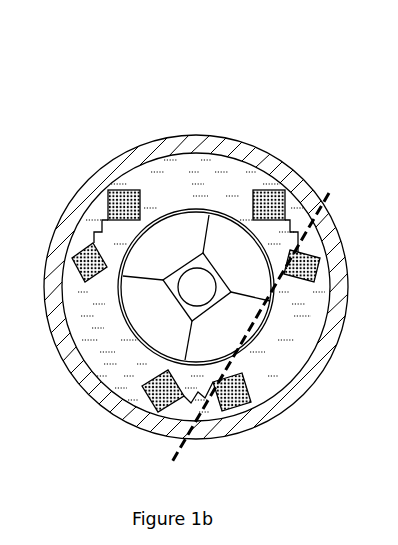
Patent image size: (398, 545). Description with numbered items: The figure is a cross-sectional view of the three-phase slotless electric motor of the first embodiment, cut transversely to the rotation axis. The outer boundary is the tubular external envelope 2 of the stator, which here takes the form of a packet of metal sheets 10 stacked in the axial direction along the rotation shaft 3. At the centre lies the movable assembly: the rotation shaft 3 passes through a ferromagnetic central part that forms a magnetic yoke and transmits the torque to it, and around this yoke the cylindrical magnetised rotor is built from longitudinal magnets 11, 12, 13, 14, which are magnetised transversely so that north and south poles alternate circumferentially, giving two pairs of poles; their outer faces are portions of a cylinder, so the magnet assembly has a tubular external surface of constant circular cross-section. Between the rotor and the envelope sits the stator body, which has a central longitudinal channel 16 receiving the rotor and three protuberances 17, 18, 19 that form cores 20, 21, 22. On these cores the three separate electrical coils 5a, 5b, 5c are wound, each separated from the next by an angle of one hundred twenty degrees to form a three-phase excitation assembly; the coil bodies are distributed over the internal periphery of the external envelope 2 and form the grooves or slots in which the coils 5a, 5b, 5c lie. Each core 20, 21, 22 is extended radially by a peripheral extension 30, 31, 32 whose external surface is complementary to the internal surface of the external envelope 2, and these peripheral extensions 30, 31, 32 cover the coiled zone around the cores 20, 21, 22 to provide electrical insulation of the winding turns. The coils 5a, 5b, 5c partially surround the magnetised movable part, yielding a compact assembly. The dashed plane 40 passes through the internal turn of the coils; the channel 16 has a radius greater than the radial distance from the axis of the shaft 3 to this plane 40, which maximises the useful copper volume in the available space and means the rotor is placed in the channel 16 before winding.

The external envelope 2 is at (56, 212).
The rotation shaft 3 is at (202, 283).
The electrical coil 5a is at (78, 270).
The electrical coil 5b is at (310, 258).
The electrical coil 5c is at (113, 192).
The metal sheets 10 is at (0, 177).
The longitudinal magnet 11 is at (148, 262).
The longitudinal magnet 12 is at (225, 230).
The longitudinal magnet 13 is at (222, 327).
The longitudinal magnet 14 is at (168, 307).
The central longitudinal channel 16 is at (278, 300).
The protuberance 17 is at (133, 367).
The protuberance 18 is at (288, 357).
The protuberance 19 is at (203, 187).
The core 20 is at (103, 300).
The core 21 is at (0, 45).
The core 22 is at (147, 200).
The peripheral extension 30 is at (79, 299).
The peripheral extension 31 is at (270, 368).
The peripheral extension 32 is at (179, 178).
The plane 40 is at (241, 343).